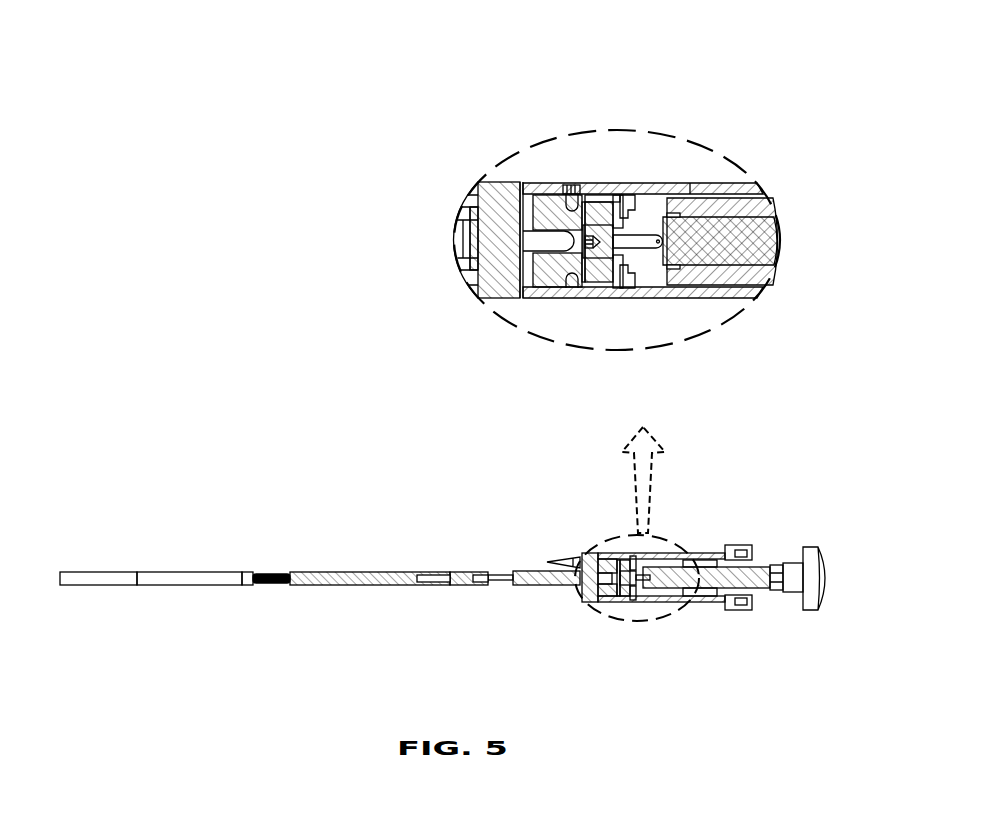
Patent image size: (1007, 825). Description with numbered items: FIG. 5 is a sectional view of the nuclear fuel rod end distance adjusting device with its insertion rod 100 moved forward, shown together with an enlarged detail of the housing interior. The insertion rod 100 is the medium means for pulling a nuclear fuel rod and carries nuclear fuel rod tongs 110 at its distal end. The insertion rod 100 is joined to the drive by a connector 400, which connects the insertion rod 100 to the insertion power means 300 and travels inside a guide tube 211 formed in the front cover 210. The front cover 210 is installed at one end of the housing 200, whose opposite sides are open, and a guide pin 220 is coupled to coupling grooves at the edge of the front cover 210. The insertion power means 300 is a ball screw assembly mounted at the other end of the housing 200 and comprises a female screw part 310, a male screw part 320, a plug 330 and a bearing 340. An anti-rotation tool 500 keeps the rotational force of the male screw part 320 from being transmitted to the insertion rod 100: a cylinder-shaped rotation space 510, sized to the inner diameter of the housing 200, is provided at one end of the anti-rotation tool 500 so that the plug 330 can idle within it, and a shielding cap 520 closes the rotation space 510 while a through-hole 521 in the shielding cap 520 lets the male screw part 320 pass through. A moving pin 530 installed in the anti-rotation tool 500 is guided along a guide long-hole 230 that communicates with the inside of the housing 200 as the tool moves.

The insertion rod 100 is at (355, 575).
The nuclear fuel rod tongs 110 is at (118, 575).
The housing 200 is at (748, 172).
The front cover 210 is at (498, 290).
The guide tube 211 is at (553, 585).
The guide pin 220 is at (563, 557).
The guide long-hole 230 is at (545, 238).
The insertion power means 300 is at (710, 432).
The female screw part 310 is at (757, 278).
The male screw part 320 is at (794, 446).
The plug 330 is at (612, 283).
The bearing 340 is at (618, 267).
The connector 400 is at (477, 192).
The anti-rotation tool 500 is at (679, 359).
The rotation space 510 is at (588, 197).
The shielding cap 520 is at (648, 197).
The through-hole 521 is at (717, 235).
The moving pin 530 is at (568, 183).